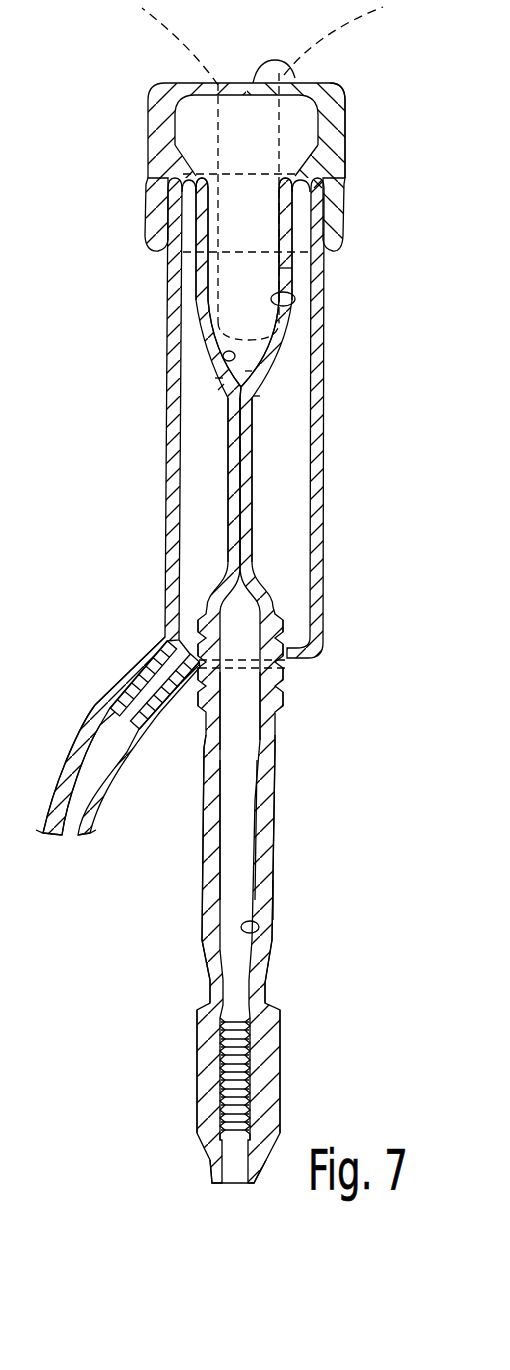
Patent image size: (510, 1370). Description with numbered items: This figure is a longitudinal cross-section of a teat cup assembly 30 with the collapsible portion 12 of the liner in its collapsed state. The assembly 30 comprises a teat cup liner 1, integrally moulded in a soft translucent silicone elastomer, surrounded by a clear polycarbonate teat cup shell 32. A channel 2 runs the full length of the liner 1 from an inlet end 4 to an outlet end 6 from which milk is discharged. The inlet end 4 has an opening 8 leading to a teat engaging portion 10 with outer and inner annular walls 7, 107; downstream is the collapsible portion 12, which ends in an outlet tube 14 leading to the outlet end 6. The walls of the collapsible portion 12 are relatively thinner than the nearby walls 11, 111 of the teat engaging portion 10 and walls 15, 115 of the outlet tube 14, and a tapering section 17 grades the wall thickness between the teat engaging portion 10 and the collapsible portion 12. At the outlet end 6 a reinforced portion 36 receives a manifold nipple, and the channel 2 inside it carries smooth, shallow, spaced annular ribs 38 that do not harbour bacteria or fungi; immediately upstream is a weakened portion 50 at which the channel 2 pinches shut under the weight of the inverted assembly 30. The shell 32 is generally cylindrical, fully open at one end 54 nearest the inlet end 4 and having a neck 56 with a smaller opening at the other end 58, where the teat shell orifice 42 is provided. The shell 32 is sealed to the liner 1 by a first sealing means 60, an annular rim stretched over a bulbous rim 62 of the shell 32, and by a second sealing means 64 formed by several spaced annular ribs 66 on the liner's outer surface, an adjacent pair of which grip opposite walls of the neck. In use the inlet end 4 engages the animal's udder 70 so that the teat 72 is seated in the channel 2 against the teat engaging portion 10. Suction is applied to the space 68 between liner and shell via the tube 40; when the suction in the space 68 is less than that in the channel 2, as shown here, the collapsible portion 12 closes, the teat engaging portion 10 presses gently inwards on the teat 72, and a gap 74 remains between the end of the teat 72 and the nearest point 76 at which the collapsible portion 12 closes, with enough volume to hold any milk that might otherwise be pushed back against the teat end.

The teat cup liner 1 is at (283, 870).
The channel 2 is at (237, 815).
The inlet end 4 is at (350, 118).
The outlet end 6 is at (204, 1177).
The outer annular wall 7 is at (298, 268).
The opening 8 is at (290, 64).
The teat engaging portion 10 is at (206, 295).
The wall of teat engaging portion 11 is at (225, 357).
The wall of teat engaging portion 111 is at (215, 378).
The collapsible portion 12 is at (229, 516).
The outlet tube 14 is at (203, 862).
The wall of outlet tube 15 is at (273, 903).
The wall of outlet tube 115 is at (261, 928).
The tapering section 17 is at (218, 390).
The teat cup assembly 30 is at (136, 128).
The teat cup shell 32 is at (165, 470).
The reinforced portion 36 is at (197, 1078).
The annular ribs 38 is at (252, 1093).
The tube 40 is at (60, 778).
The teat shell orifice 42 is at (162, 650).
The weakened portion 50 is at (208, 990).
The open end of shell 54 is at (240, 170).
The neck 56 is at (288, 665).
The other end of shell 58 is at (243, 672).
The first sealing means 60 is at (140, 200).
The bulbous rim 62 is at (323, 184).
The second sealing means 64 is at (187, 703).
The annular ribs 66 is at (284, 648).
The space 68 is at (290, 488).
The udder 70 is at (333, 38).
The teat 72 is at (290, 312).
The gap 74 is at (245, 371).
The nearest point 76 is at (253, 396).
The inner annular wall 107 is at (296, 300).